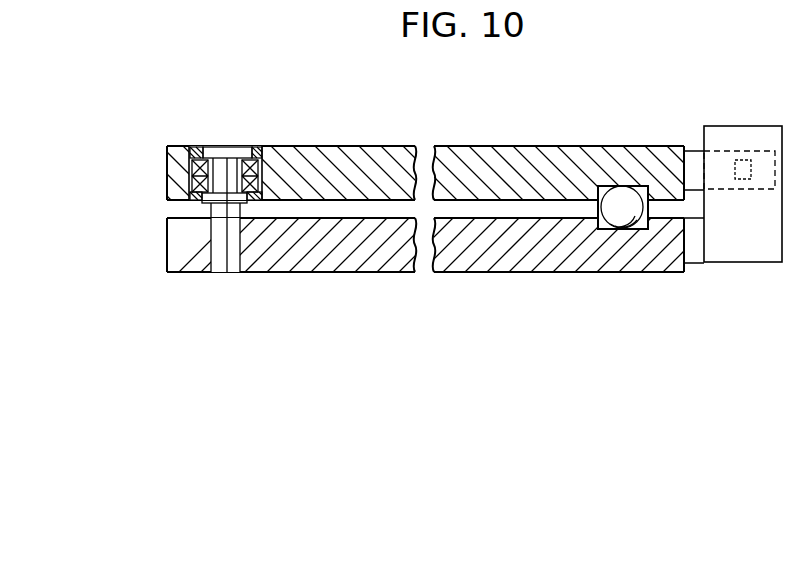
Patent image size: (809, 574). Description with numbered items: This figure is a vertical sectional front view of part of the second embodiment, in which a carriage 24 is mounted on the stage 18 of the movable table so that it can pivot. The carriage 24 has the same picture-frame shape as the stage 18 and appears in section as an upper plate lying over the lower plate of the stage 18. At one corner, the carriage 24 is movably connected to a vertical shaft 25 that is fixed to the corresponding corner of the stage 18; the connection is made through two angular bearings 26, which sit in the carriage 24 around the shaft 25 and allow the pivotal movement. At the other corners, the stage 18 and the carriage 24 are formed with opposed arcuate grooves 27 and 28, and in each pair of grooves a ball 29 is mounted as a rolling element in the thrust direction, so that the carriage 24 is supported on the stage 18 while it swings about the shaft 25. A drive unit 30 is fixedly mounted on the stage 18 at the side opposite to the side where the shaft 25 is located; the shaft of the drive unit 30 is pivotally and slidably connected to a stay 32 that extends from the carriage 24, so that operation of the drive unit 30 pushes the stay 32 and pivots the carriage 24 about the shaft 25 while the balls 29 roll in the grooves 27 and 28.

The stage 18 is at (537, 254).
The carriage 24 is at (328, 152).
The vertical shaft 25 is at (218, 262).
The angular bearings 26 is at (191, 183).
The arcuate groove 27 is at (597, 165).
The arcuate groove 28 is at (612, 230).
The ball 29 is at (645, 228).
The drive unit 30 is at (760, 240).
The stay 32 is at (700, 157).